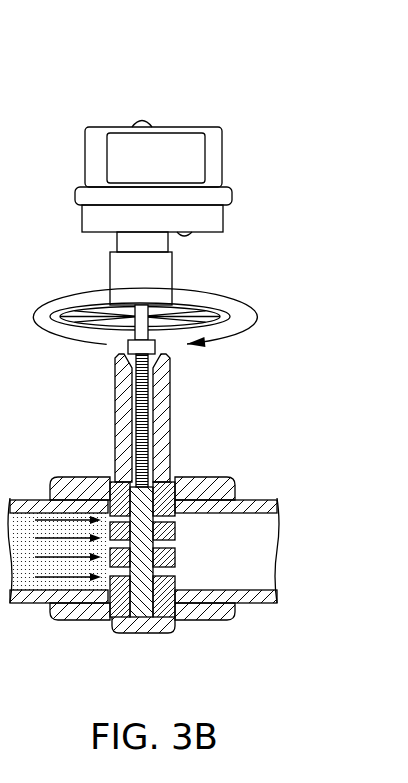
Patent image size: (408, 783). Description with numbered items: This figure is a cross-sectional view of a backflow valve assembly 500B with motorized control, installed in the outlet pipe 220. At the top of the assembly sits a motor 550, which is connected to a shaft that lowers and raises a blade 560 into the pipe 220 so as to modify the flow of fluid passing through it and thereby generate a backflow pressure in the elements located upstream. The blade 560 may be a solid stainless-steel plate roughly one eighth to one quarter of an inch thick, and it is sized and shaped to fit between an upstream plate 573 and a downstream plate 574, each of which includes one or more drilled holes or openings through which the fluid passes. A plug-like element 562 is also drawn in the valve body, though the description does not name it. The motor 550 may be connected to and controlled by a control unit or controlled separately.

The backflow valve assembly 500B is at (136, 104).
The motor 550 is at (222, 157).
The blade 560 is at (145, 448).
The outlet pipe 220 is at (30, 500).
The upstream plate 573 is at (110, 617).
The plug 562 is at (140, 617).
The downstream plate 574 is at (175, 617).